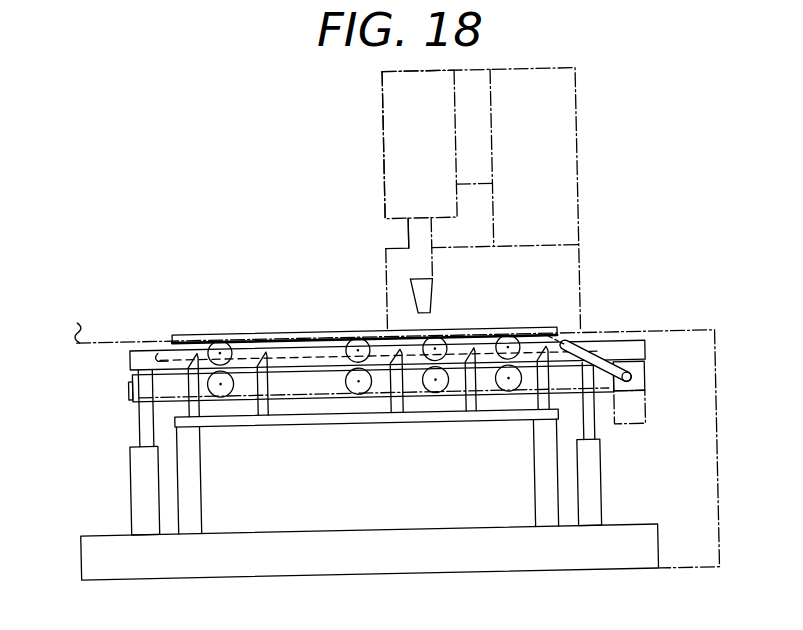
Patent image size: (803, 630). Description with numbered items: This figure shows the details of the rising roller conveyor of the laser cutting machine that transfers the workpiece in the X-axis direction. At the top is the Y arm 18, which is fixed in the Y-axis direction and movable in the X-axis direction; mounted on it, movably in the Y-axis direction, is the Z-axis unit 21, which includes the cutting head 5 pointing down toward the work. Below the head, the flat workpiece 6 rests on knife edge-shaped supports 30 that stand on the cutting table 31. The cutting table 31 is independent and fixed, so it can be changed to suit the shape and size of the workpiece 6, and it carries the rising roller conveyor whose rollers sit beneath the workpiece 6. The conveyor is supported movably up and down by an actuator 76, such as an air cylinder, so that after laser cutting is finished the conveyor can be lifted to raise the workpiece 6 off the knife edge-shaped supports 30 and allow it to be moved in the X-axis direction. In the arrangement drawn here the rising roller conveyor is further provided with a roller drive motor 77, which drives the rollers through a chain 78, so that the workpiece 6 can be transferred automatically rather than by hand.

The Y arm 18 is at (570, 141).
The Z-axis unit 21 is at (402, 140).
The cutting head 5 is at (421, 262).
The workpiece 6 is at (296, 330).
The knife edge-shaped supports 30 is at (268, 400).
The cutting table 31 is at (307, 574).
The actuator 76 is at (139, 468).
The roller drive motor 77 is at (648, 377).
The chain 78 is at (600, 361).